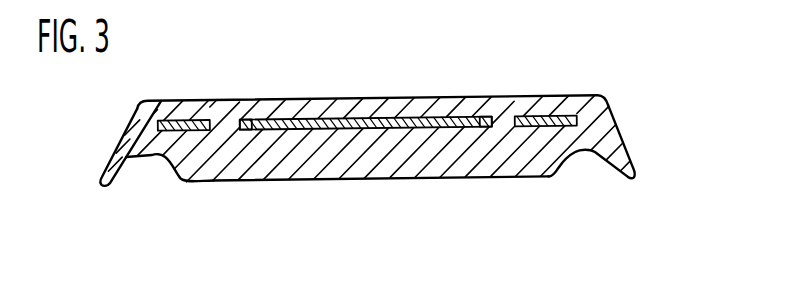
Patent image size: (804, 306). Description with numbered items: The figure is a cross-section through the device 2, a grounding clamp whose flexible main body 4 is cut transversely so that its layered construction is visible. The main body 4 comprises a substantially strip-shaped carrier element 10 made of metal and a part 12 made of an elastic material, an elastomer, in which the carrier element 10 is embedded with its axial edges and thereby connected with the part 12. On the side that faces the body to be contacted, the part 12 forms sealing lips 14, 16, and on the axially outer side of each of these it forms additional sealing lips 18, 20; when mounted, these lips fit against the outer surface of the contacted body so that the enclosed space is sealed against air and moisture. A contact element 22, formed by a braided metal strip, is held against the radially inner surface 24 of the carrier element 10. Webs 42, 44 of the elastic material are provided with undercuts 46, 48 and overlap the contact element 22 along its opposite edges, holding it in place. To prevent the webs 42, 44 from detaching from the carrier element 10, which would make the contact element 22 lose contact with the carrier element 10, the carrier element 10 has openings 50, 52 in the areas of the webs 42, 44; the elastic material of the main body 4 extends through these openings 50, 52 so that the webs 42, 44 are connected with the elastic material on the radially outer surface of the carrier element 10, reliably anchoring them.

The device 2 is at (388, 92).
The main body 4 is at (552, 92).
The carrier element 10 is at (345, 116).
The part made of elastic material 12 is at (284, 117).
The sealing lip 14 is at (190, 179).
The sealing lip 16 is at (548, 180).
The additional sealing lip 18 is at (104, 183).
The additional sealing lip 20 is at (636, 181).
The contact element 22 is at (353, 176).
The radially inner surface 24 is at (418, 129).
The web 42 is at (238, 164).
The web 44 is at (484, 161).
The undercut 46 is at (243, 120).
The undercut 48 is at (467, 116).
The opening 50 is at (215, 116).
The opening 52 is at (505, 117).